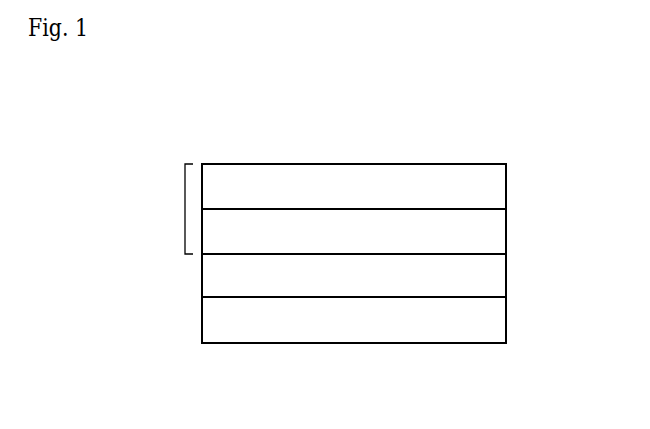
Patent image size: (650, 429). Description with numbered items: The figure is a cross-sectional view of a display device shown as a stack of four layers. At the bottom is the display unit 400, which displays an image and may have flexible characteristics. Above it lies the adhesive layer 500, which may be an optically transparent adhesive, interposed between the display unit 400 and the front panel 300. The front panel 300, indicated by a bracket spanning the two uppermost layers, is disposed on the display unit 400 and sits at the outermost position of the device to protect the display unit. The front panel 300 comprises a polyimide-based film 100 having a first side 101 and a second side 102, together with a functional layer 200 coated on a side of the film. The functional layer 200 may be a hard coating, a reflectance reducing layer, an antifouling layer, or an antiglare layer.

The functional layer 200 is at (472, 193).
The polyimide-based film 100 is at (472, 237).
The adhesive layer 500 is at (473, 281).
The display unit 400 is at (473, 322).
The front panel 300 is at (185, 209).
The second side 102 is at (351, 208).
The first side 101 is at (316, 255).